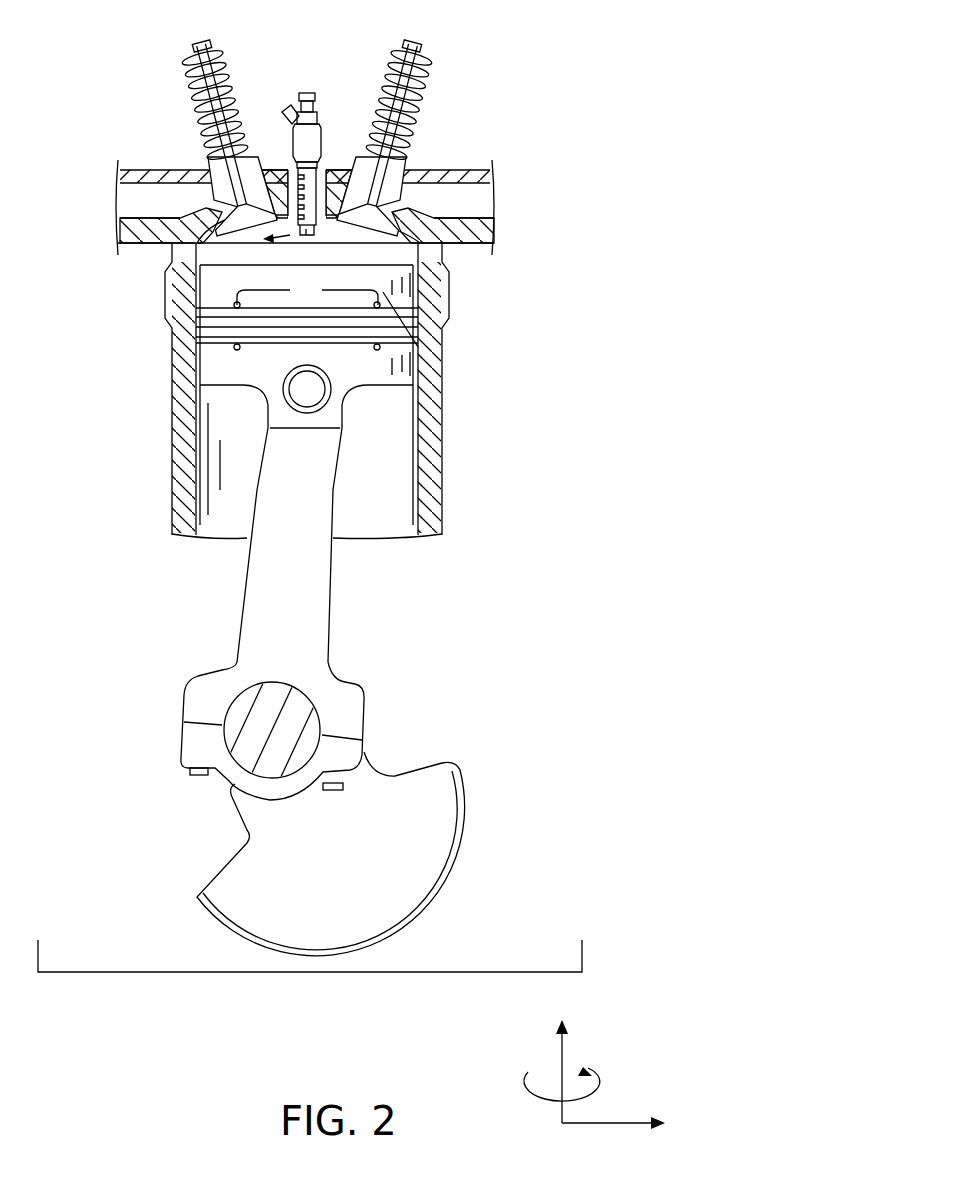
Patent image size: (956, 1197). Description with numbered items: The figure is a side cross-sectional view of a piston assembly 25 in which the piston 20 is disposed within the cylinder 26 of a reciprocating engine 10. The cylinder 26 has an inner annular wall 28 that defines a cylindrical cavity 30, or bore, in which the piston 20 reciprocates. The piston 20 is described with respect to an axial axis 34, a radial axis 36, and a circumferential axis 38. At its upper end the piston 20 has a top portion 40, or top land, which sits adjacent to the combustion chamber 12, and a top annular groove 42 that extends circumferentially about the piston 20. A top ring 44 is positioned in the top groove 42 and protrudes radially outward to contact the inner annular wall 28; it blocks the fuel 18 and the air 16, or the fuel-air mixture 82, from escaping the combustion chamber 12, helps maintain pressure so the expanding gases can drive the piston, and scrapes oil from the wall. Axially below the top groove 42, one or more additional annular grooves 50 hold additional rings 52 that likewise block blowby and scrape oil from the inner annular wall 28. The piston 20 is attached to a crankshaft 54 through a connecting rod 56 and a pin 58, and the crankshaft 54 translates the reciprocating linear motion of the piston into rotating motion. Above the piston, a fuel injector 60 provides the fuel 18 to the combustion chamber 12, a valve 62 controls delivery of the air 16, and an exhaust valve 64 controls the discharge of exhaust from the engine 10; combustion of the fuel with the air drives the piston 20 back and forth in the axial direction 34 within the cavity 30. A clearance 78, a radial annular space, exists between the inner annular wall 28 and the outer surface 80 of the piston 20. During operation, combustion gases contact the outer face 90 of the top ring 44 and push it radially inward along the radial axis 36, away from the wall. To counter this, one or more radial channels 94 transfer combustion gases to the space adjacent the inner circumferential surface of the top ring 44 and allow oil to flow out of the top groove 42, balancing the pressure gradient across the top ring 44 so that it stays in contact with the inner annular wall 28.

The reciprocating engine 10 is at (569, 94).
The combustion chamber 12 is at (347, 233).
The air 16 is at (226, 212).
The fuel 18 is at (307, 84).
The piston 20 is at (443, 418).
The piston assembly 25 is at (352, 508).
The cylinder 26 is at (175, 421).
The inner annular wall 28 is at (202, 464).
The cylindrical cavity 30 is at (220, 528).
The axial axis 34 is at (560, 1057).
The radial axis 36 is at (605, 1124).
The circumferential axis 38 is at (598, 1091).
The top portion 40 is at (443, 377).
The top annular groove 42 is at (167, 289).
The top ring 44 is at (267, 308).
The additional annular grooves 50 is at (418, 326).
The additional rings 52 is at (353, 335).
The crankshaft 54 is at (242, 882).
The connecting rod 56 is at (312, 645).
The pin 58 is at (312, 397).
The fuel injector 60 is at (316, 108).
The valve 62 is at (200, 48).
The exhaust valve 64 is at (412, 48).
The clearance 78 is at (443, 320).
The outer surface 80 is at (443, 278).
The fuel-air mixture 82 is at (292, 230).
The outer face 90 is at (197, 320).
The radial channels 94 is at (307, 293).